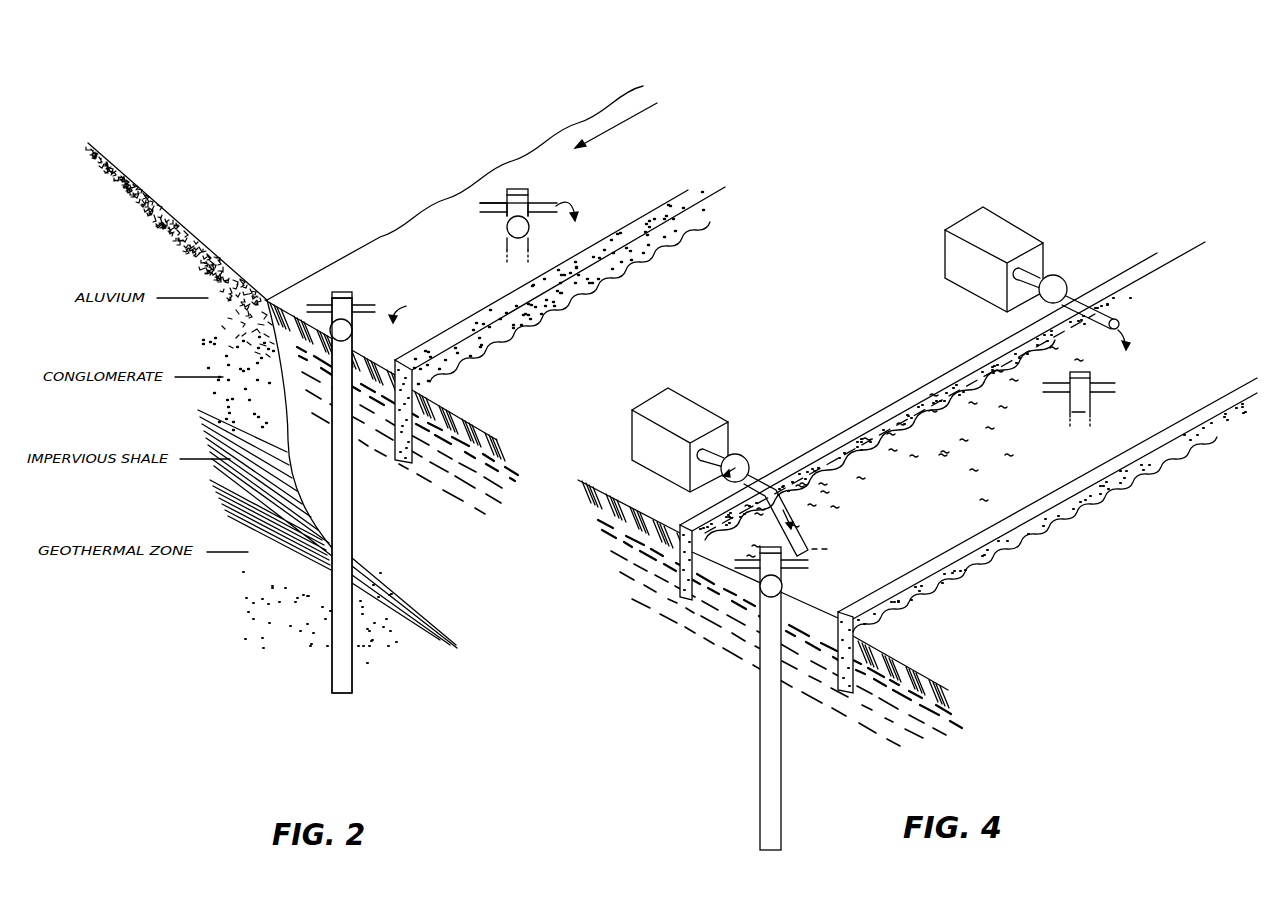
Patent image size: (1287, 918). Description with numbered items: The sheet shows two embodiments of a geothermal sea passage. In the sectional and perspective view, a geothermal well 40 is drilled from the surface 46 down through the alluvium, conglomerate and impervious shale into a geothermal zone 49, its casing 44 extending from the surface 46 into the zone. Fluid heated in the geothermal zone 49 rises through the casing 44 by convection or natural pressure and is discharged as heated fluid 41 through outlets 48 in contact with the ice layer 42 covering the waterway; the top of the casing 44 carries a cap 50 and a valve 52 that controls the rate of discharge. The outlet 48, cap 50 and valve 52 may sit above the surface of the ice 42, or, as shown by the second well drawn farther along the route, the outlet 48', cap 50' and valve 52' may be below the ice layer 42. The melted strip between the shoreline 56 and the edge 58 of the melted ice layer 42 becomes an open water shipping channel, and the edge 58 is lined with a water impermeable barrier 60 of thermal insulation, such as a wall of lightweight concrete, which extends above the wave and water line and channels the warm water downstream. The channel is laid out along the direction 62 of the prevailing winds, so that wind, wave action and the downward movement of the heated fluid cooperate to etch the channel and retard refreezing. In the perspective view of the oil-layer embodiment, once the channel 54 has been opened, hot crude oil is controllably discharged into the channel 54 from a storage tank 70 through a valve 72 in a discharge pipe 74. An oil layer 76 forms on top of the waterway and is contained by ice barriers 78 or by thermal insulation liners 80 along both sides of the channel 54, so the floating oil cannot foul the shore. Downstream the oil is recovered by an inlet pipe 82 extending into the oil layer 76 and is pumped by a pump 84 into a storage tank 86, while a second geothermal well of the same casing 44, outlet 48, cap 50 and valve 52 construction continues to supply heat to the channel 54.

In FIG. 2, the geothermal well 40 is at (352, 490).
In FIG. 2, the heated fluid 41 is at (496, 256).
In FIG. 2, the ice layer 42 is at (287, 307).
In FIG. 2, the casing 44 is at (353, 545).
In FIG. 4, the casing 44 is at (782, 698).
In FIG. 2, the surface 46 is at (227, 249).
In FIG. 2, the outlet 48 is at (351, 297).
In FIG. 4, the outlet 48 is at (785, 573).
In FIG. 2, the outlet 48' is at (531, 192).
In FIG. 2, the geothermal zone 49 is at (232, 584).
In FIG. 2, the cap 50 is at (356, 284).
In FIG. 4, the cap 50 is at (762, 538).
In FIG. 2, the cap 50' is at (530, 213).
In FIG. 2, the valve 52 is at (360, 333).
In FIG. 4, the valve 52 is at (789, 589).
In FIG. 2, the valve 52' is at (494, 231).
In FIG. 4, the open water shipping channel 54 is at (950, 489).
In FIG. 2, the shoreline 56 is at (383, 236).
In FIG. 2, the edge of the melted ice layer 58 is at (480, 348).
In FIG. 2, the water impermeable barrier 60 is at (540, 305).
In FIG. 2, the direction of the prevailing winds 62 is at (608, 130).
In FIG. 4, the storage tank 70 is at (1007, 220).
In FIG. 4, the valve 72 is at (1060, 268).
In FIG. 4, the discharge pipe 74 is at (1107, 307).
In FIG. 4, the oil layer 76 is at (728, 582).
In FIG. 4, the ice barrier 78 is at (827, 454).
In FIG. 4, the thermal insulation liner 80 is at (913, 391).
In FIG. 4, the inlet pipe 82 is at (802, 520).
In FIG. 4, the pump 84 is at (748, 457).
In FIG. 4, the storage tank 86 is at (715, 412).